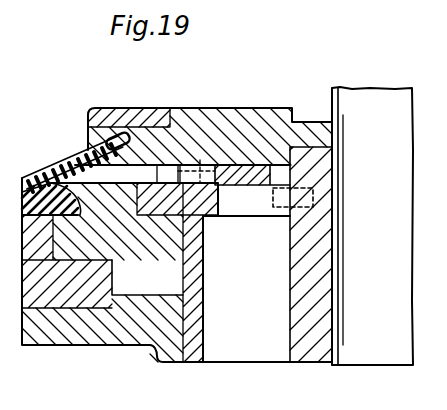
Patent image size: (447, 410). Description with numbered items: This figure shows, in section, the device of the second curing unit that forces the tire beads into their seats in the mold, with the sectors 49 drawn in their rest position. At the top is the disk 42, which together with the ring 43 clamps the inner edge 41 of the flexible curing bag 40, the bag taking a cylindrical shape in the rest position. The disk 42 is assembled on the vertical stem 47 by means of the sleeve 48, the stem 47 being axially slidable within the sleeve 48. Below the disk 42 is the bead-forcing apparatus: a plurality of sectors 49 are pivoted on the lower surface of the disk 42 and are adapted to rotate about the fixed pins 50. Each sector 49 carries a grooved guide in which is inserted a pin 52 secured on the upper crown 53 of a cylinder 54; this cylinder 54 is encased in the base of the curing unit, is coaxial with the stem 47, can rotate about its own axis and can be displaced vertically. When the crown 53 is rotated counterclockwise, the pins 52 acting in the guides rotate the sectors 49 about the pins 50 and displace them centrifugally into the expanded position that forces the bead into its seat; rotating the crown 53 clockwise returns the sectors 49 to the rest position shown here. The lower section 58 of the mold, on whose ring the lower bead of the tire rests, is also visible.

The flexible curing bag 40 is at (48, 180).
The inner edge 41 is at (118, 133).
The disk 42 is at (230, 120).
The ring 43 is at (90, 124).
The vertical stem 47 is at (368, 95).
The sleeve 48 is at (297, 347).
The sectors 49 is at (240, 167).
The fixed pins 50 is at (265, 222).
The pin 52 is at (200, 160).
The upper crown 53 is at (155, 165).
The cylinder 54 is at (203, 278).
The lower section 58 is at (112, 283).